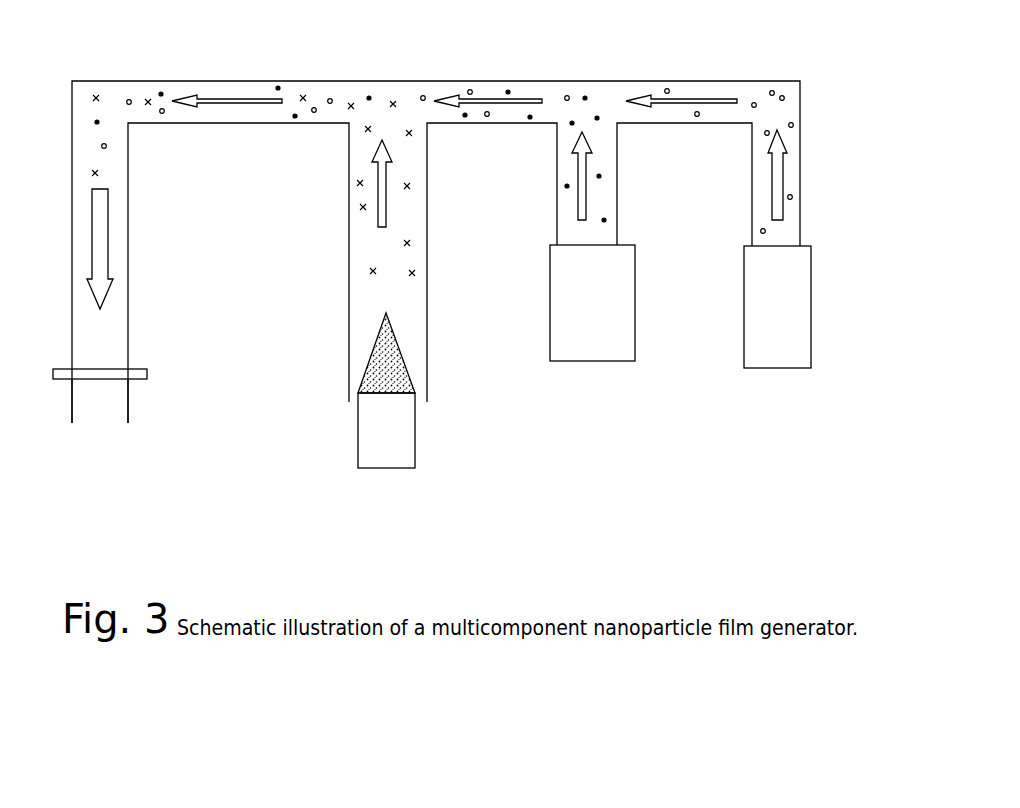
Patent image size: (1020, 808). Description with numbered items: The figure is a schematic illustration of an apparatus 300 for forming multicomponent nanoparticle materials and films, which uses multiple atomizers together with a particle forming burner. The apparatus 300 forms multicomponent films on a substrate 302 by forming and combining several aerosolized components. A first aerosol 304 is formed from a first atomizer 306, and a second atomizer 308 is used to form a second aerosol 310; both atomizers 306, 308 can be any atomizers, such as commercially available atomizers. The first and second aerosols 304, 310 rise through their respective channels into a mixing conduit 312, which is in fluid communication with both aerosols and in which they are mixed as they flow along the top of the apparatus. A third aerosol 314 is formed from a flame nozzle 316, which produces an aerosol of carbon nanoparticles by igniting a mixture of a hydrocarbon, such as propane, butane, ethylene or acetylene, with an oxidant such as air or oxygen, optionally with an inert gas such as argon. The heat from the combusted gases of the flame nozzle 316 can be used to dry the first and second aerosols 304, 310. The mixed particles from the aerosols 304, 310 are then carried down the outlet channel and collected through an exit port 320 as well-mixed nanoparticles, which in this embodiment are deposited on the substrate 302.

The apparatus 300 is at (91, 59).
The substrate 302 is at (117, 367).
The first aerosol 304 is at (787, 95).
The first atomizer 306 is at (812, 317).
The second atomizer 308 is at (637, 317).
The second aerosol 310 is at (599, 105).
The mixing conduit 312 is at (465, 80).
The third aerosol 314 is at (403, 138).
The flame nozzle 316 is at (405, 347).
The exit port 320 is at (97, 419).